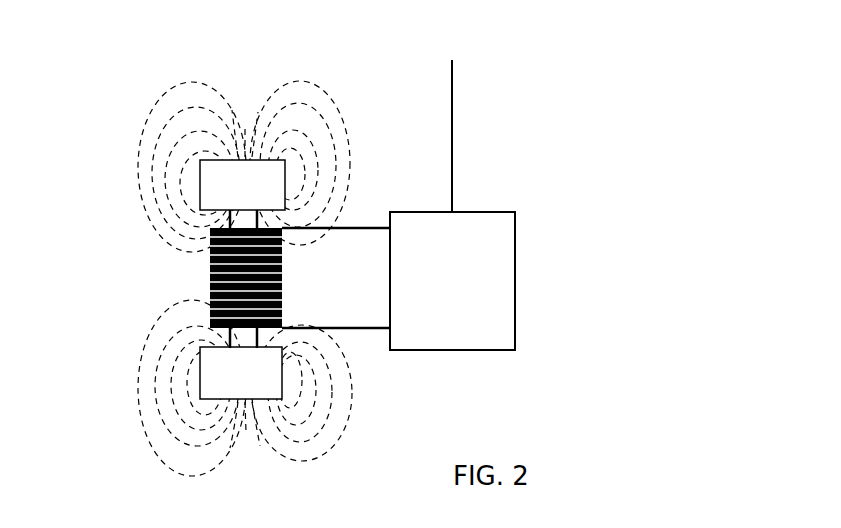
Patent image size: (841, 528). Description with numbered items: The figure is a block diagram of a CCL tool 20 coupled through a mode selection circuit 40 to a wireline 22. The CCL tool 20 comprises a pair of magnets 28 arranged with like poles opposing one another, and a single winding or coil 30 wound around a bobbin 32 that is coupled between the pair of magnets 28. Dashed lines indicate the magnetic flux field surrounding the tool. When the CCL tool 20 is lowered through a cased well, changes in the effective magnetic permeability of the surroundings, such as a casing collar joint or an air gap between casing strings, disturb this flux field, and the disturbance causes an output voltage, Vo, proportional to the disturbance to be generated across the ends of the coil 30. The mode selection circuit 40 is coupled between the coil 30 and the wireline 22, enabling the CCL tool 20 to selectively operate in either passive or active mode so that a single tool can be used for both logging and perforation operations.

The CCL tool 20 is at (110, 132).
The wireline 22 is at (453, 130).
The magnets 28 is at (202, 193).
The coil 30 is at (207, 282).
The bobbin 32 is at (227, 218).
The mode selection circuit 40 is at (516, 270).